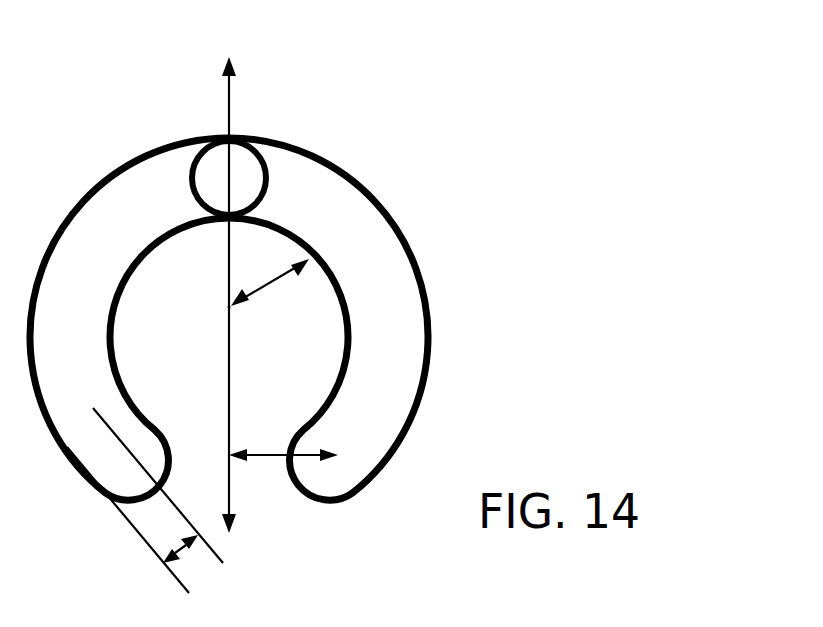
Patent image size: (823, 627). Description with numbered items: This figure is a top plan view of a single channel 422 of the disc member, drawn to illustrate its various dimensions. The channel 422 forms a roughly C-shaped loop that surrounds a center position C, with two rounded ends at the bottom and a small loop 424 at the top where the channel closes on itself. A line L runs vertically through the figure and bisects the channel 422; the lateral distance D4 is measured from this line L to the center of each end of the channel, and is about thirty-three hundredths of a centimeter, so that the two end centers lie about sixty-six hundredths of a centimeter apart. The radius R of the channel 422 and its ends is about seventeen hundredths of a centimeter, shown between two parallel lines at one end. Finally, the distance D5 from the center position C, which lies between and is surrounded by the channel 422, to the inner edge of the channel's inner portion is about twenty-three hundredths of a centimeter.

The channel 422 is at (413, 325).
The loop of ring 424 is at (240, 152).
The line L is at (239, 294).
The center position C is at (211, 308).
The distance D5 is at (270, 292).
The lateral distance D4 is at (283, 436).
The radius R is at (145, 500).